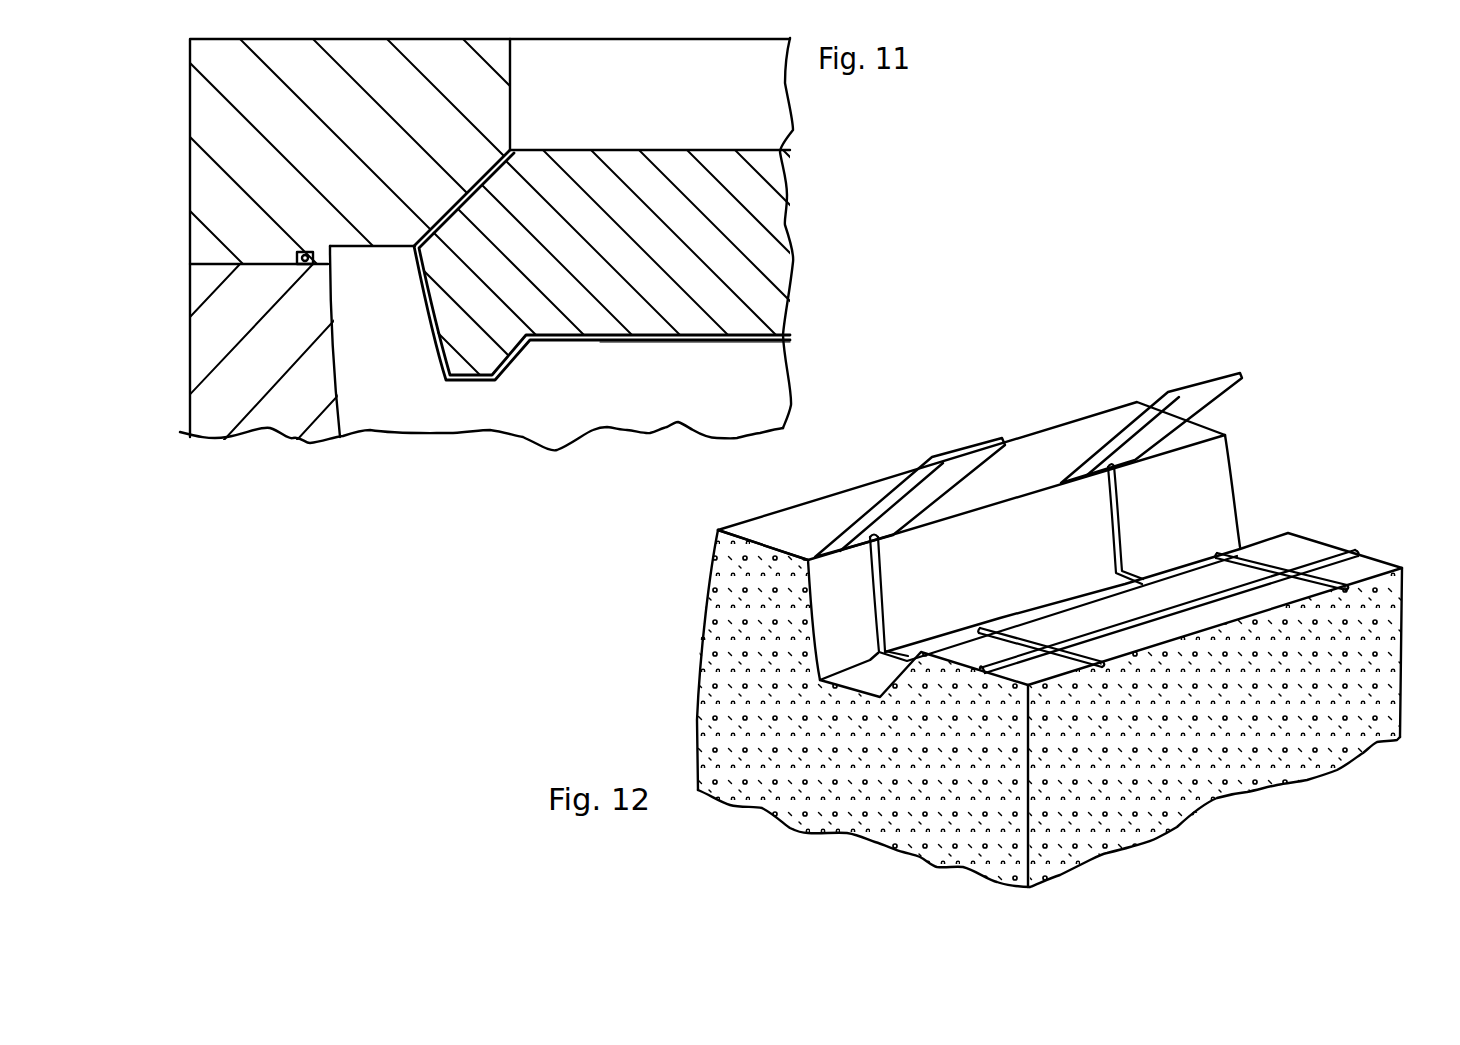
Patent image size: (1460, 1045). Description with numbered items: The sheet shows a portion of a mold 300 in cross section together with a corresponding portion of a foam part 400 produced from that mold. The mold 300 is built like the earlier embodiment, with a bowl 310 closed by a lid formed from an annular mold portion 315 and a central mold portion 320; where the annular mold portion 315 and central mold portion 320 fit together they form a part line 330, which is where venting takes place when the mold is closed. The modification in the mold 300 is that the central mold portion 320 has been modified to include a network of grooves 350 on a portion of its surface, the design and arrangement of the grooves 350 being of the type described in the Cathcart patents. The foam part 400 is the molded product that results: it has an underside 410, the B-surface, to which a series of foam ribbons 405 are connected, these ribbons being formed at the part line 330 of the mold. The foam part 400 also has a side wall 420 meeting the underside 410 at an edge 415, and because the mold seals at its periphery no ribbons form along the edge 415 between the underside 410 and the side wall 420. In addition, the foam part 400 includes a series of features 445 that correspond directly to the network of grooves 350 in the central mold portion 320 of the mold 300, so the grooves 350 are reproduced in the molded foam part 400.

In FIG. 11, the mold 300 is at (429, 30).
In FIG. 11, the bowl 310 is at (210, 345).
In FIG. 11, the annular mold portion 315 is at (222, 120).
In FIG. 11, the central mold portion 320 is at (693, 193).
In FIG. 11, the part line 330 is at (452, 200).
In FIG. 11, the grooves 350 is at (567, 345).
In FIG. 12, the foam part 400 is at (1097, 388).
In FIG. 12, the foam ribbons 405 is at (965, 448).
In FIG. 12, the underside 410 is at (815, 523).
In FIG. 12, the edge 415 is at (717, 528).
In FIG. 12, the side wall 420 is at (700, 660).
In FIG. 12, the ribs 445 is at (870, 577).